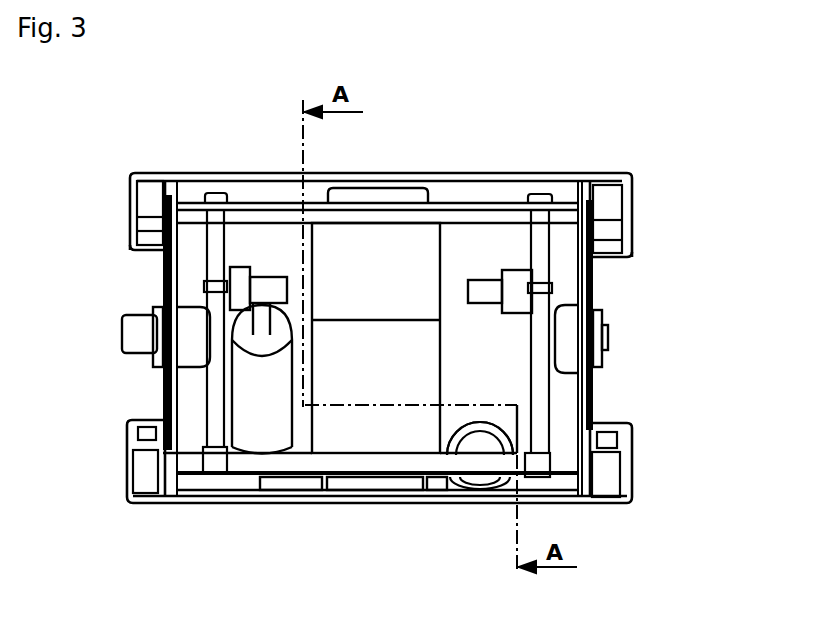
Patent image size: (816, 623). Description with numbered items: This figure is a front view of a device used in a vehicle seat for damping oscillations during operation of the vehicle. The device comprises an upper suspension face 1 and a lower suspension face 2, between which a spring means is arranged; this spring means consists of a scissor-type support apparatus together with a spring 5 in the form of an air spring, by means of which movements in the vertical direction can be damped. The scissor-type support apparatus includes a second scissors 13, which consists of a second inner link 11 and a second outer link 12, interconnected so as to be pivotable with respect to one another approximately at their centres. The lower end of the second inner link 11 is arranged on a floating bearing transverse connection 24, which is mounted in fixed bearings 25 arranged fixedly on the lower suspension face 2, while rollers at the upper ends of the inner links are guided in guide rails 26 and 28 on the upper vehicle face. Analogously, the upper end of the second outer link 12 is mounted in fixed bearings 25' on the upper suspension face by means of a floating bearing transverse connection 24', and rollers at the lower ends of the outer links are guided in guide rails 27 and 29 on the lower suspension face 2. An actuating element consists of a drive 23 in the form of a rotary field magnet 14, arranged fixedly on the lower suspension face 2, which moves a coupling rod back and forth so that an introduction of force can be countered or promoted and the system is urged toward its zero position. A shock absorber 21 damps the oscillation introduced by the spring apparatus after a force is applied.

The upper suspension face 1 is at (515, 172).
The lower suspension face 2 is at (303, 503).
The spring 5 is at (360, 275).
The second inner link 11 is at (535, 402).
The second outer link 12 is at (590, 280).
The second scissors 13 is at (130, 333).
The rotary field magnet 14 is at (480, 502).
The shock absorber 21 is at (265, 427).
The drive 23 is at (475, 478).
The floating bearing transverse connection 24 is at (368, 387).
The floating bearing transverse connection 24' is at (377, 163).
The fixed bearings 25 is at (378, 494).
The fixed bearings 25' is at (409, 180).
The guide rail 26 is at (130, 198).
The guide rail 27 is at (123, 463).
The guide rail 28 is at (633, 200).
The guide rail 29 is at (627, 467).